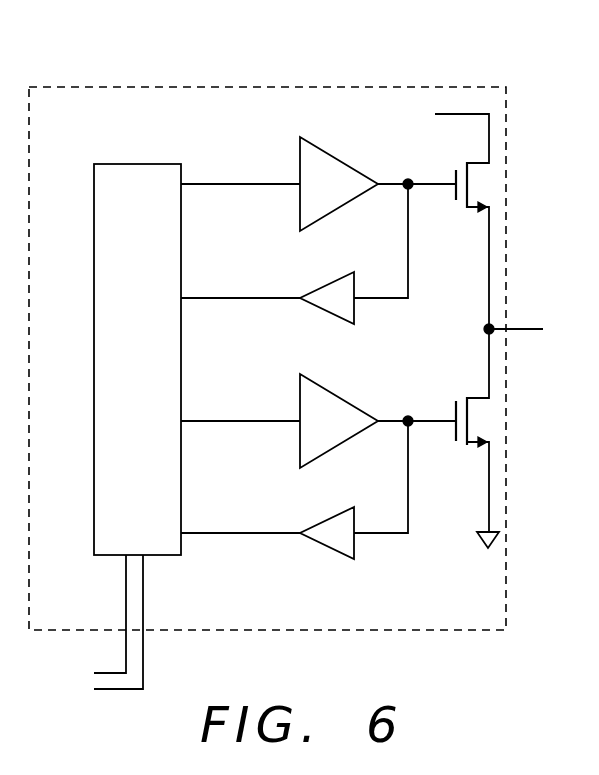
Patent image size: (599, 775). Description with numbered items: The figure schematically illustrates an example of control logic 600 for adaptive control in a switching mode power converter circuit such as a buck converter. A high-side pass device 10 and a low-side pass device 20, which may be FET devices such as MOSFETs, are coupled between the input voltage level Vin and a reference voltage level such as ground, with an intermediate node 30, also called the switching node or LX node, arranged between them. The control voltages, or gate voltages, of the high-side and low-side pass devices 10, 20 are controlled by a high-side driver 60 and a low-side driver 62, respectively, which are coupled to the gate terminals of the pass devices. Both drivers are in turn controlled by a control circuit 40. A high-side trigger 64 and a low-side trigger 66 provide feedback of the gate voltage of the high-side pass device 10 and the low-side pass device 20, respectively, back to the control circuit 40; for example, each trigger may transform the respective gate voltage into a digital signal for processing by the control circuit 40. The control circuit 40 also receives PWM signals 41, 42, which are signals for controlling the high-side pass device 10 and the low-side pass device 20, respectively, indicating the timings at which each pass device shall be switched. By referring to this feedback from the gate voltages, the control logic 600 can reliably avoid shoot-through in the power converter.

The control logic 600 is at (130, 50).
The control circuit 40 is at (160, 164).
The high-side driver 60 is at (335, 158).
The low-side driver 62 is at (335, 395).
The high-side trigger 64 is at (330, 313).
The low-side trigger 66 is at (330, 548).
The high-side pass device 10 is at (478, 185).
The low-side pass device 20 is at (478, 420).
The intermediate node 30 is at (492, 323).
The PWM signal 41 is at (110, 670).
The PWM signal 42 is at (110, 691).